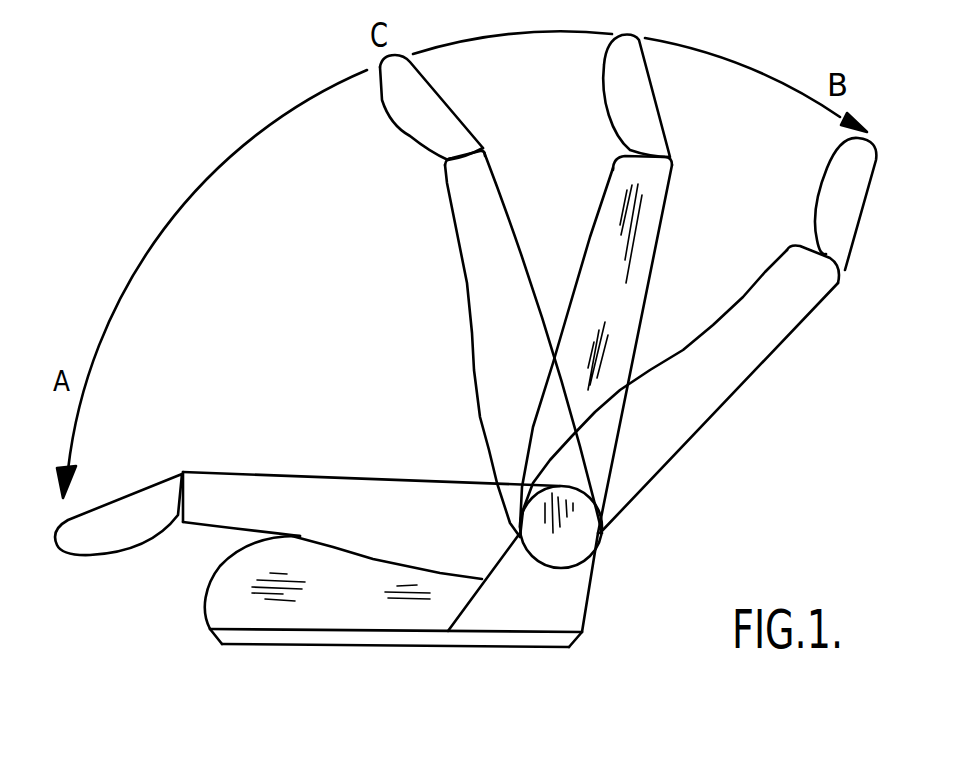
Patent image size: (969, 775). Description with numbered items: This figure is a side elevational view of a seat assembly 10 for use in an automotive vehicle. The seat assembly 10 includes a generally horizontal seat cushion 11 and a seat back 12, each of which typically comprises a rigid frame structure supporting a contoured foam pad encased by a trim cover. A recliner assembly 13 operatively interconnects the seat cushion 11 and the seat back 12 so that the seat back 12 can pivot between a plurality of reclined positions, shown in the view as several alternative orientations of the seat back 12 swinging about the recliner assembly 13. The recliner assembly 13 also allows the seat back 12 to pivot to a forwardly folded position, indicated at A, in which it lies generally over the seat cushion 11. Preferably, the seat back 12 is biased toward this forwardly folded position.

The seat assembly 10 is at (580, 676).
The seat cushion 11 is at (330, 610).
The seat back 12 is at (603, 283).
The recliner assembly 13 is at (584, 520).